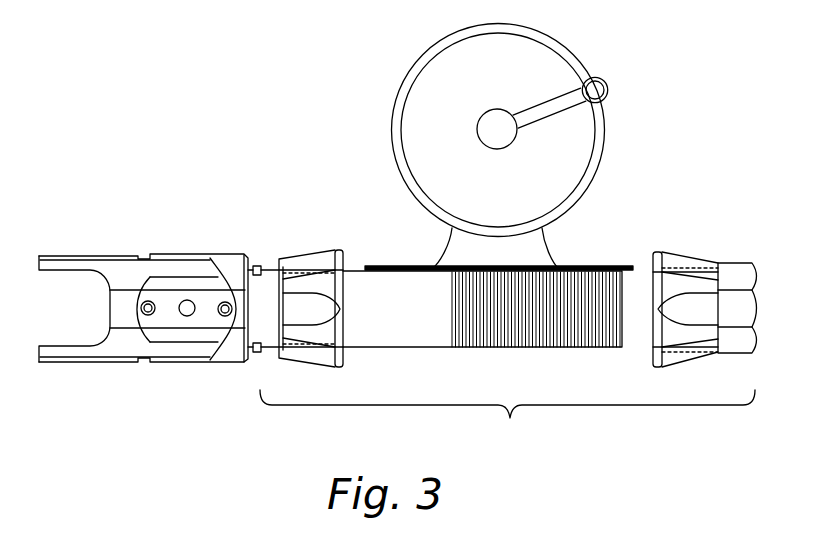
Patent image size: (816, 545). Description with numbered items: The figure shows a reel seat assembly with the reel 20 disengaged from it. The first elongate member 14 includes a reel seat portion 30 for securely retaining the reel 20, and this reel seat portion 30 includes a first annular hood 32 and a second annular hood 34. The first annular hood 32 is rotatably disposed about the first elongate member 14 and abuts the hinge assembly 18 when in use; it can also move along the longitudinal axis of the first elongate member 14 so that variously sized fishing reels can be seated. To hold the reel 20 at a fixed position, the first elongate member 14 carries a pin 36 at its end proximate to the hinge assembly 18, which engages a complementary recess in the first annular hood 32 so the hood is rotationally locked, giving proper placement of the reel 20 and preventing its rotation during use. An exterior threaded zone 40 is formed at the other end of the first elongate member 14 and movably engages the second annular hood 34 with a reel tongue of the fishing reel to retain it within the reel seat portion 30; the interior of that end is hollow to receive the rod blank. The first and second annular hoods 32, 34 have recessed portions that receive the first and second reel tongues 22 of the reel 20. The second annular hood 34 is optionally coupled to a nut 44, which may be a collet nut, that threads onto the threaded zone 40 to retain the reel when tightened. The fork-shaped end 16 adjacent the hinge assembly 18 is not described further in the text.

The first elongate member 14 is at (384, 348).
The fork end 16 is at (112, 363).
The hinge assembly 18 is at (176, 236).
The reel 20 is at (437, 50).
The reel tongues 22 is at (397, 268).
The reel seat portion 30 is at (507, 418).
The first annular hood 32 is at (305, 252).
The second annular hood 34 is at (687, 252).
The pin 36 is at (263, 265).
The exterior threaded zone 40 is at (540, 325).
The nut 44 is at (741, 273).